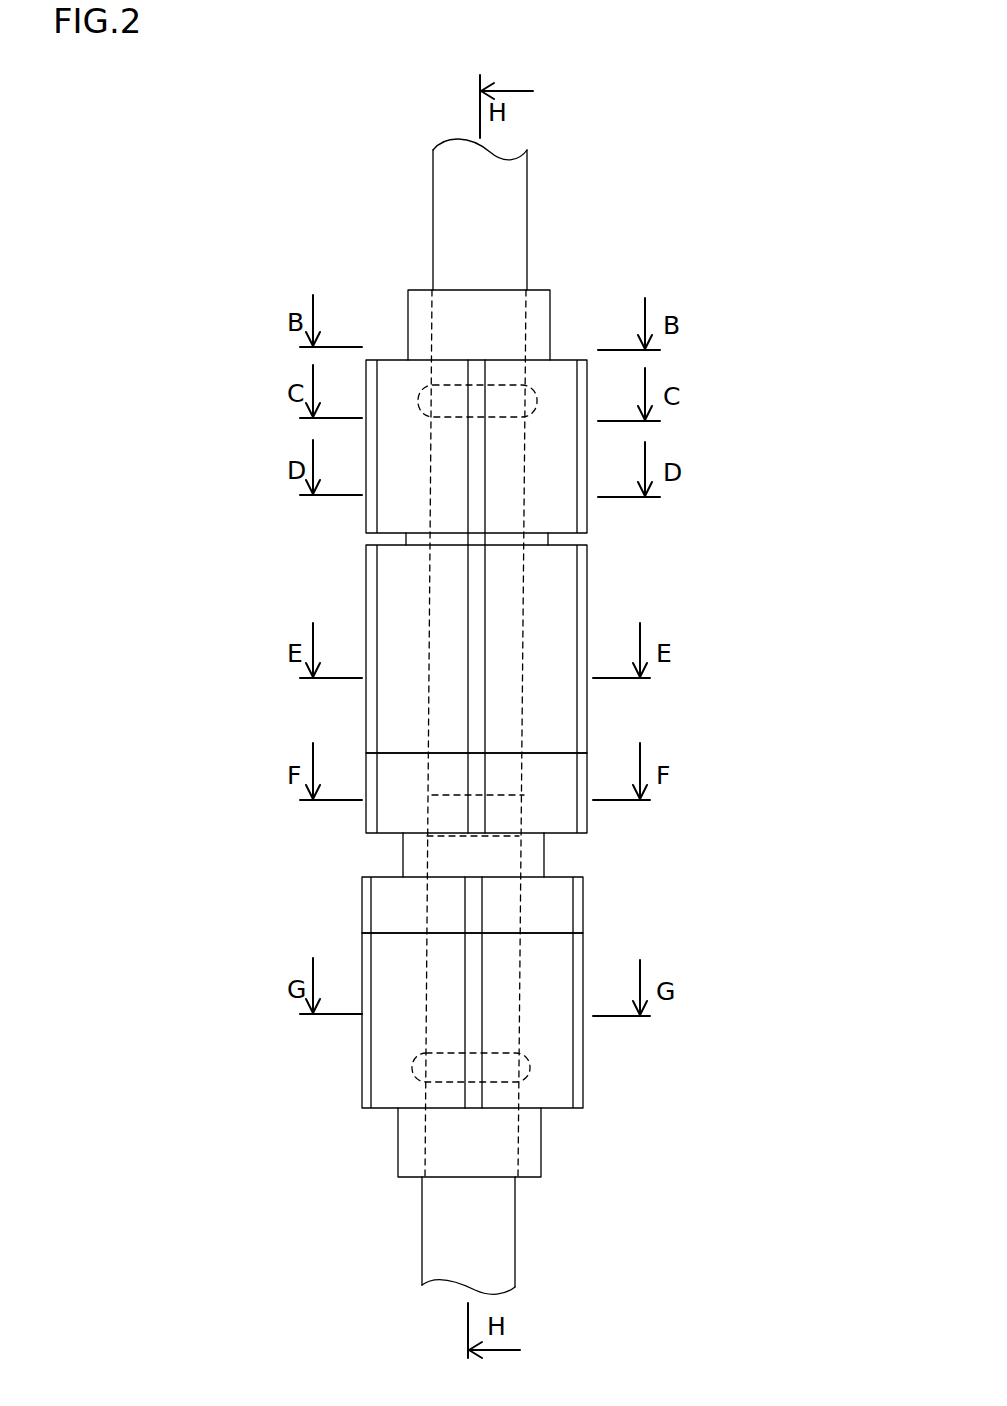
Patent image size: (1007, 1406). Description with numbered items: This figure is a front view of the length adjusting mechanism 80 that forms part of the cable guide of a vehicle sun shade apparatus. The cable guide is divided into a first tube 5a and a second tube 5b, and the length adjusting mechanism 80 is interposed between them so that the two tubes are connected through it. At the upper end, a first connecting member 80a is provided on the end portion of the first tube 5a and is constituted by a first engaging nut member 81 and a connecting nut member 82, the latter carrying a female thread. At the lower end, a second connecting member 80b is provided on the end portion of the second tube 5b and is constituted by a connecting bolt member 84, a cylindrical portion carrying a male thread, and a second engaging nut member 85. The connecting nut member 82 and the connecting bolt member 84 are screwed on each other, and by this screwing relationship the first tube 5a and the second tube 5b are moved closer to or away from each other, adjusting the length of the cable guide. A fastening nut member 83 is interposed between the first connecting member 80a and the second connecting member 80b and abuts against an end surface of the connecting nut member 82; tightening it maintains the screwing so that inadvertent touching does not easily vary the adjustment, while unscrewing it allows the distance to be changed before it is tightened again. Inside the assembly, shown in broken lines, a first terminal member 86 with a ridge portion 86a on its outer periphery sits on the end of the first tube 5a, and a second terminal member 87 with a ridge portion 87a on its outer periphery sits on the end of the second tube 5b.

The first tube 5a is at (507, 213).
The second tube 5b is at (497, 1207).
The length adjusting mechanism 80 is at (385, 310).
The first connecting member 80a is at (718, 250).
The second connecting member 80b is at (718, 1079).
The first engaging nut member 81 is at (545, 332).
The connecting nut member 82 is at (565, 570).
The fastening nut member 83 is at (560, 787).
The connecting bolt member 84 is at (584, 909).
The second engaging nut member 85 is at (584, 1060).
The first terminal member 86 is at (450, 583).
The ridge portion 86a is at (427, 400).
The second terminal member 87 is at (447, 906).
The ridge portion 87a is at (412, 1068).